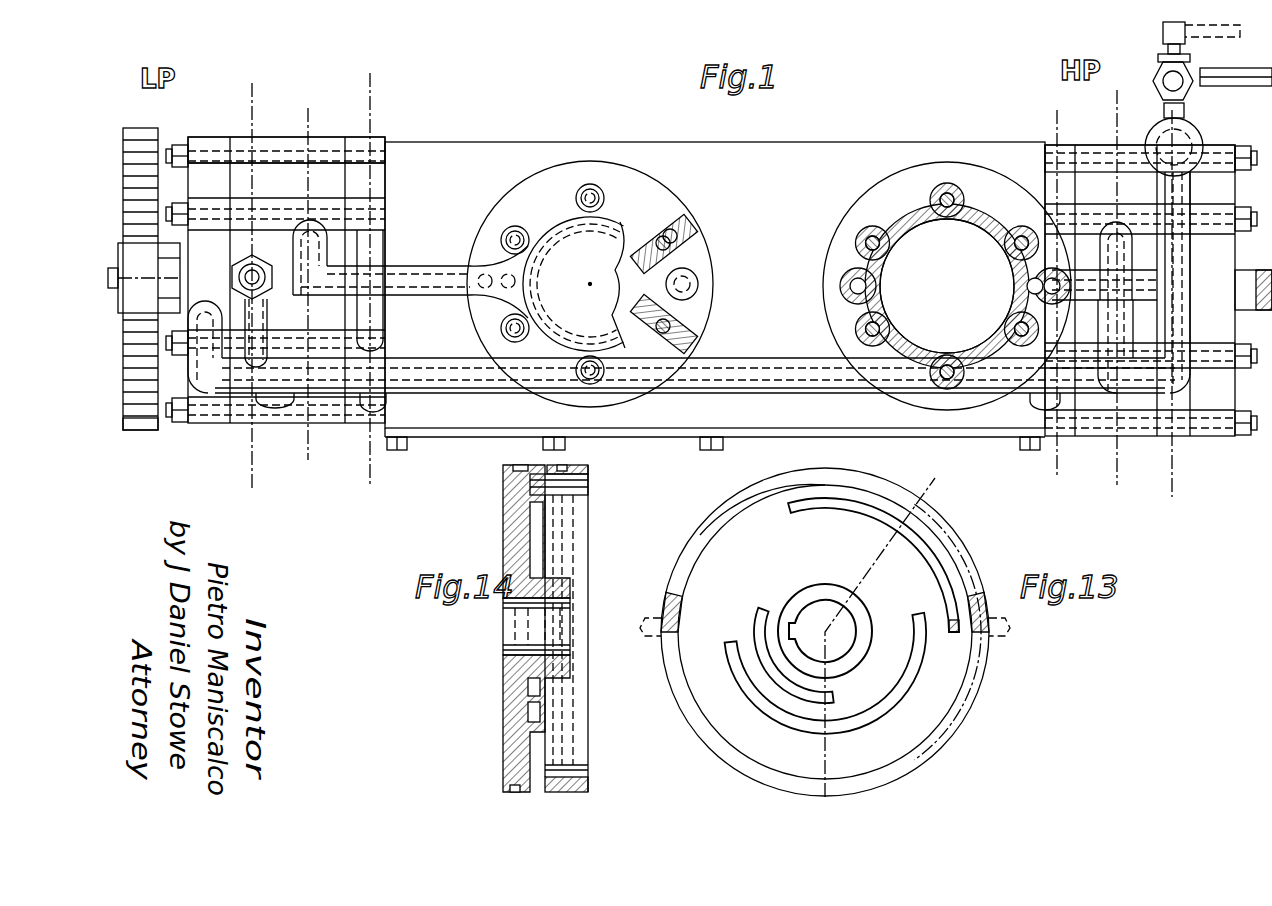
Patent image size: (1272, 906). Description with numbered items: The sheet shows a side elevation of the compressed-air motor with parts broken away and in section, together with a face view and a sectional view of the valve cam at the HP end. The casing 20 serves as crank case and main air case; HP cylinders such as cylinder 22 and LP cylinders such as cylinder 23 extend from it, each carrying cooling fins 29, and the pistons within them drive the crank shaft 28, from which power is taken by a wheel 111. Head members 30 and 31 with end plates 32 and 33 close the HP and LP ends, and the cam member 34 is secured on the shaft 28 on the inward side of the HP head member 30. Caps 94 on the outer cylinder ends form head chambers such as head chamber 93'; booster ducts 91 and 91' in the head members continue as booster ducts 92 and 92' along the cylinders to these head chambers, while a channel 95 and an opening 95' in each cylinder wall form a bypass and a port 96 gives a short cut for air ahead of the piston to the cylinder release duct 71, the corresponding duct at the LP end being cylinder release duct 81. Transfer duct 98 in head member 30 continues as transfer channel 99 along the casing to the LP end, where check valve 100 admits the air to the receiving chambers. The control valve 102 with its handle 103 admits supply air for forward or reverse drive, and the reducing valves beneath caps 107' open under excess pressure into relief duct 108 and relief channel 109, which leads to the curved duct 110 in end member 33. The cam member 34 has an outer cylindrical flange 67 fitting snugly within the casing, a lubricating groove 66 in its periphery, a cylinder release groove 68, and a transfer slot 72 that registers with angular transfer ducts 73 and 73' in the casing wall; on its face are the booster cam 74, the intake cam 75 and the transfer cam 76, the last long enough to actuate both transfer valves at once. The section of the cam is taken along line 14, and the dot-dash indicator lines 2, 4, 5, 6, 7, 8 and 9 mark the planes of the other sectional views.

In FIG. 1, the sprocket gear 2 is at (110, 262).
In FIG. 1, the section line 4 is at (1188, 42).
In FIG. 1, the section line 5 is at (1135, 90).
In FIG. 1, the section line 6 is at (1080, 110).
In FIG. 1, the section line 7 is at (395, 73).
In FIG. 1, the section line 8 is at (335, 108).
In FIG. 1, the section line 9 is at (268, 83).
In FIG. 13, the section line 14— 14 is at (950, 498).
In FIG. 1, the casing 20 is at (700, 146).
In FIG. 1, the HP cylinder 22 is at (978, 222).
In FIG. 1, the LP cylinder 23 is at (635, 225).
In FIG. 1, the crank shaft 28 is at (1258, 250).
In FIG. 1, the cooling fins 29 is at (494, 218).
In FIG. 1, the head member 30 is at (1093, 150).
In FIG. 1, the head member 31 is at (300, 140).
In FIG. 1, the end plate 32 is at (1230, 147).
In FIG. 1, the end plate 33 is at (213, 137).
In FIG. 13, the cam member 34 is at (715, 505).
In FIG. 14, the cam member 34 is at (503, 503).
In FIG. 14, the lubricating groove 66 is at (510, 466).
In FIG. 13, the outer cylindrical flange 67 is at (762, 488).
In FIG. 14, the outer cylindrical flange 67 is at (588, 470).
In FIG. 13, the cylinder release groove 68 is at (985, 570).
In FIG. 14, the cylinder release groove 68 is at (564, 466).
In FIG. 1, the cylinder release duct 71 is at (1036, 296).
In FIG. 13, the transfer slot 72 is at (728, 755).
In FIG. 14, the transfer slot 72 is at (508, 790).
In FIG. 13, the angular transfer duct 73 is at (645, 609).
In FIG. 13, the angular transfer duct 73' is at (1035, 626).
In FIG. 13, the booster cam 74 is at (762, 600).
In FIG. 14, the booster cam 74 is at (545, 689).
In FIG. 13, the intake cam 75 is at (940, 575).
In FIG. 14, the intake cam 75 is at (545, 498).
In FIG. 13, the transfer cam 76 is at (862, 715).
In FIG. 14, the transfer cam 76 is at (542, 720).
In FIG. 1, the cylinder release duct 81 is at (555, 282).
In FIG. 1, the booster duct 91 is at (1105, 261).
In FIG. 1, the booster duct 91' is at (324, 257).
In FIG. 1, the booster duct 92 is at (1052, 273).
In FIG. 1, the booster duct 92' is at (410, 280).
In FIG. 1, the head chamber 93' is at (671, 221).
In FIG. 1, the cap 94 is at (545, 222).
In FIG. 1, the channel 95 is at (771, 270).
In FIG. 1, the opening 95' is at (947, 286).
In FIG. 1, the port 96 is at (527, 287).
In FIG. 1, the transfer duct 98 is at (1134, 335).
In FIG. 1, the transfer channel 99 is at (296, 390).
In FIG. 1, the check valve 100 is at (253, 278).
In FIG. 1, the control valve 102 is at (1158, 68).
In FIG. 1, the handle 103 is at (1163, 25).
In FIG. 1, the cap 107' is at (1188, 139).
In FIG. 1, the relief duct 108 is at (1190, 280).
In FIG. 1, the relief channel 109 is at (412, 368).
In FIG. 1, the curved duct 110 is at (196, 364).
In FIG. 1, the wheel 111 is at (138, 430).